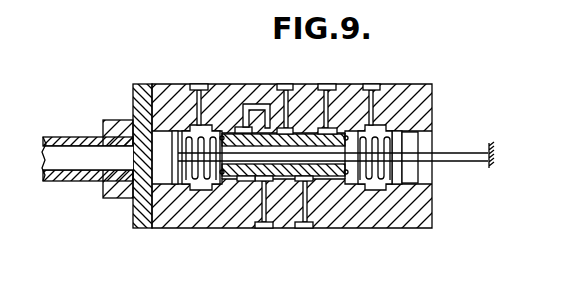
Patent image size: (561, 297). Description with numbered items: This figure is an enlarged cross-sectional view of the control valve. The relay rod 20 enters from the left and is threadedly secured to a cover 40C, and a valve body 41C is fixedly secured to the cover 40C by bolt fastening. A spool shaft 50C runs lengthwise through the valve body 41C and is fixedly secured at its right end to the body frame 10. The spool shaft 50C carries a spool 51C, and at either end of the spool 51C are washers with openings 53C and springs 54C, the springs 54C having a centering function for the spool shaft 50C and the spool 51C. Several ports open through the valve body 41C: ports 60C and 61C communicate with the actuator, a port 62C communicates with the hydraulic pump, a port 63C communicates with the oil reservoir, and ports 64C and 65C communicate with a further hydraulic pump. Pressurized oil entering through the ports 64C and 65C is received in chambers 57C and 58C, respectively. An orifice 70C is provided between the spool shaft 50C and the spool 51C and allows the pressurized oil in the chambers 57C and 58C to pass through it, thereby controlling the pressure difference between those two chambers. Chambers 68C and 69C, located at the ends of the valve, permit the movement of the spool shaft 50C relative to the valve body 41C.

The body frame 10 is at (492, 166).
The relay rod 20 is at (56, 136).
The cover 40C is at (132, 216).
The valve body 41C is at (195, 218).
The spool shaft 50C is at (455, 152).
The spool 51C is at (343, 115).
The washers with openings 53C is at (220, 186).
The springs 54C is at (172, 186).
The chamber 57C is at (214, 131).
The chamber 58C is at (380, 108).
The port 60C is at (263, 229).
The port 61C is at (308, 229).
The port 62C is at (327, 84).
The port 63C is at (280, 84).
The port 64C is at (193, 84).
The port 65C is at (373, 84).
The chamber 68C is at (156, 130).
The chamber 69C is at (432, 112).
The orifice 70C is at (283, 181).